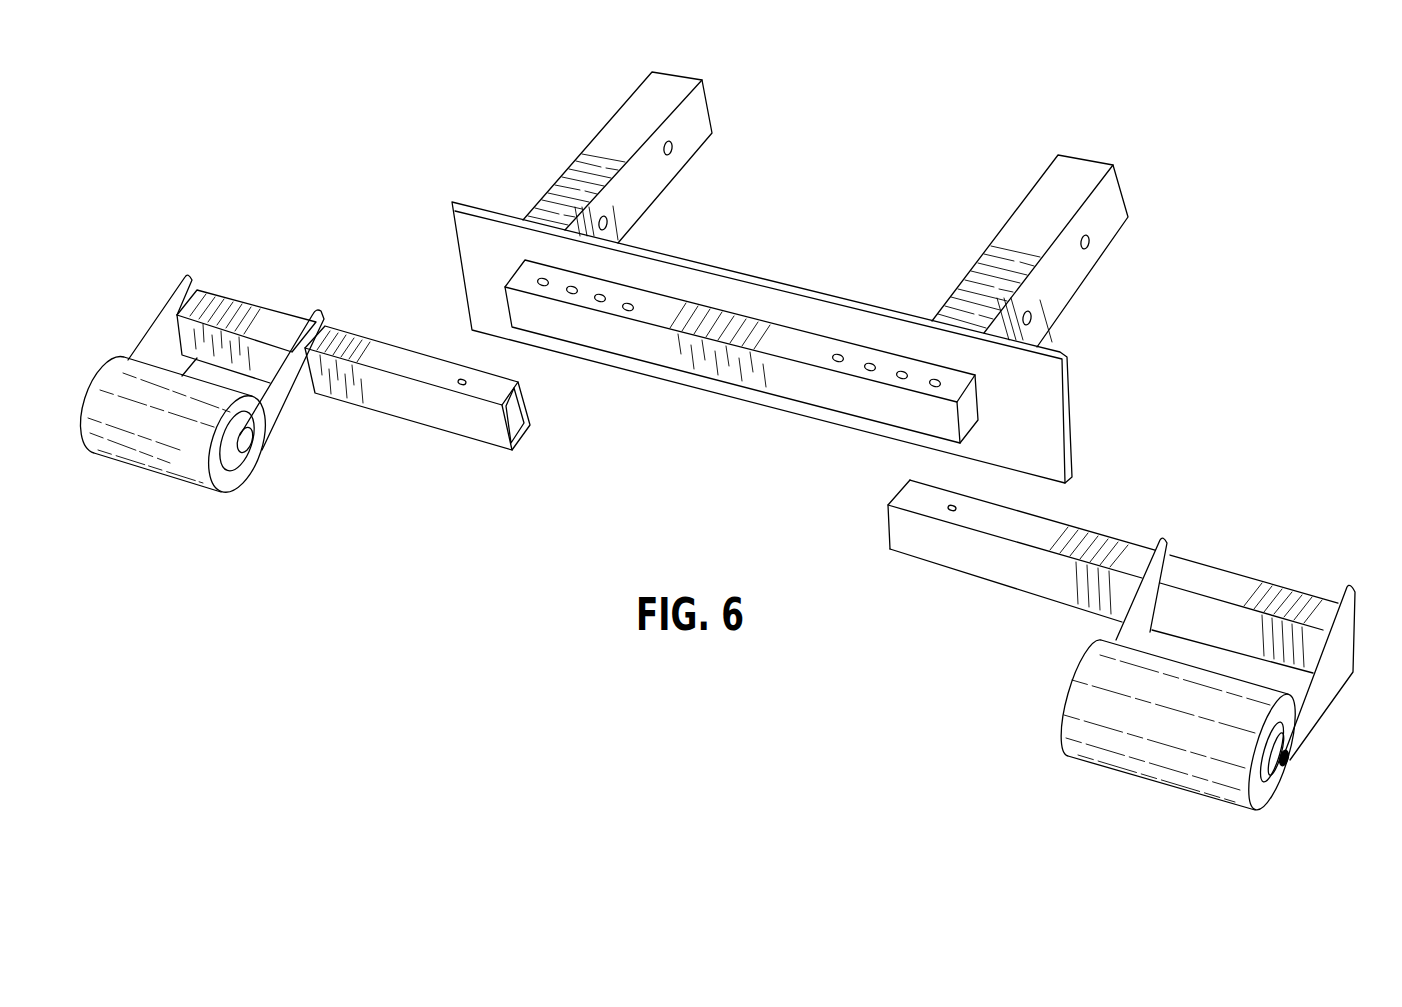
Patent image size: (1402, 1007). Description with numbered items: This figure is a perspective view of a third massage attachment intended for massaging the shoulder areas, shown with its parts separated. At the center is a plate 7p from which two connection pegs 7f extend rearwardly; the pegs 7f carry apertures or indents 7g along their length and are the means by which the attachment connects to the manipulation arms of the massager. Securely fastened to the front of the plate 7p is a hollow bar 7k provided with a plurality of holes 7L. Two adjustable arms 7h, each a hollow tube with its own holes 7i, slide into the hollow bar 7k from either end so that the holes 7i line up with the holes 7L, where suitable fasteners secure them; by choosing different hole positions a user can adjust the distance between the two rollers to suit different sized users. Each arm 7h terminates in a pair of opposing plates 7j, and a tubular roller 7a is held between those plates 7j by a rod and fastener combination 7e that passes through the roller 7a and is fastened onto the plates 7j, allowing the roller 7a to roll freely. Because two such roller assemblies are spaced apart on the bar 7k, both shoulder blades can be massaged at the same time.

The tubular roller 7a is at (170, 477).
The rod and fastener combination 7e is at (252, 457).
The connection pegs 7f is at (607, 118).
The apertures or indents 7g is at (672, 152).
The adjustable arms 7h is at (243, 305).
The holes 7i is at (462, 385).
The opposing plates 7j is at (156, 323).
The hollow bar 7k is at (741, 356).
The holes 7L is at (840, 354).
The plate 7p is at (452, 202).